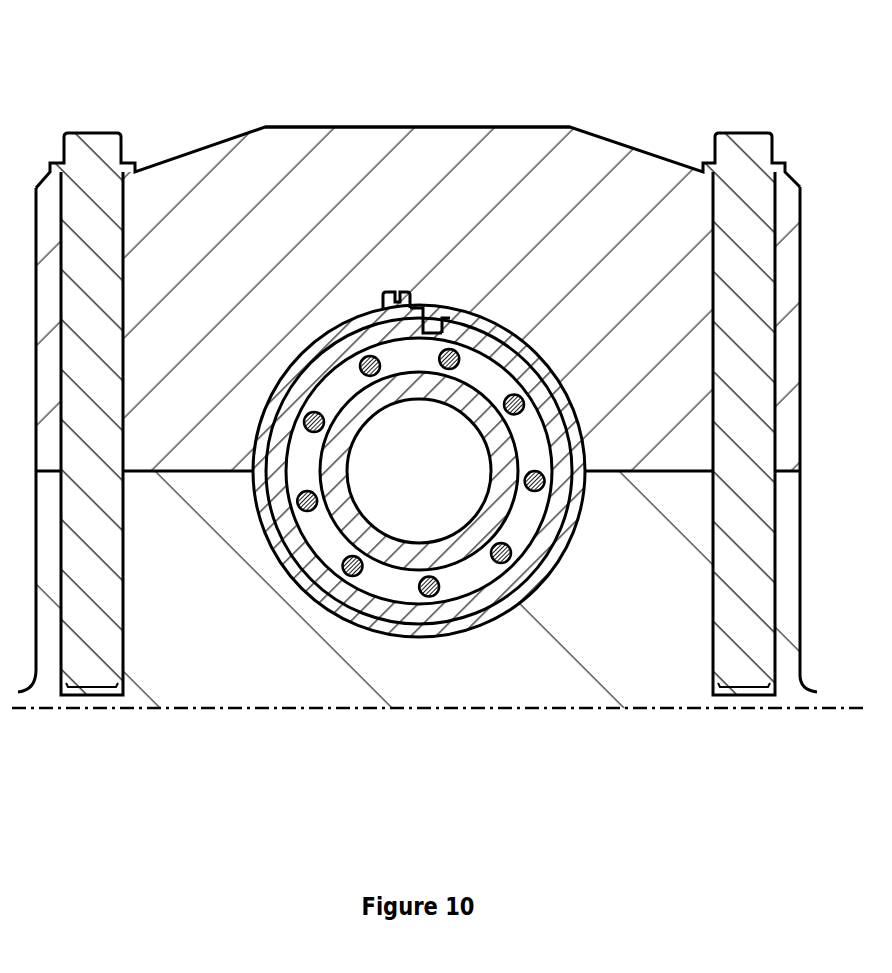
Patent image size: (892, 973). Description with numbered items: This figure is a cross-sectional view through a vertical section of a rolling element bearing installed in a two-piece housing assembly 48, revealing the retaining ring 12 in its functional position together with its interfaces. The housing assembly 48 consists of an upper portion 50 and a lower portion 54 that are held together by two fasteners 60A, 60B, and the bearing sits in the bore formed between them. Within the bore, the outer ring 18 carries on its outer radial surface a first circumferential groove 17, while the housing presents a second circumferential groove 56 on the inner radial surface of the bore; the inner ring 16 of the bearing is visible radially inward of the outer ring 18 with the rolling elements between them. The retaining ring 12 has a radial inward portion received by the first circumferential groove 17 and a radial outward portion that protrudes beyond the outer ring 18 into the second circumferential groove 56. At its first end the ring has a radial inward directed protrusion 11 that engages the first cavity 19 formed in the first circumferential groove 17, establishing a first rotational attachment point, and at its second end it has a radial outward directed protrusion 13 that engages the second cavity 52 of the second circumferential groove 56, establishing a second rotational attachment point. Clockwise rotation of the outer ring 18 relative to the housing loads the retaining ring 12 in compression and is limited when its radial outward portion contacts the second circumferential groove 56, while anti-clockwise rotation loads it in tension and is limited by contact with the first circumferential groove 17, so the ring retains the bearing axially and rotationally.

The two-piece housing assembly 48 is at (363, 116).
The upper portion 50 is at (503, 140).
The lower portion 54 is at (608, 660).
The fastener 60A is at (78, 153).
The fastener 60B is at (742, 143).
The second circumferential groove 56 is at (300, 350).
The retaining ring 12 is at (328, 608).
The outer ring 18 is at (397, 607).
The first circumferential groove 17 is at (515, 360).
The inner ring 16 is at (445, 550).
The second cavity 52 is at (387, 293).
The first cavity 19 is at (383, 305).
The radial outward directed protrusion 13 is at (398, 297).
The radial inward directed protrusion 11 is at (440, 315).